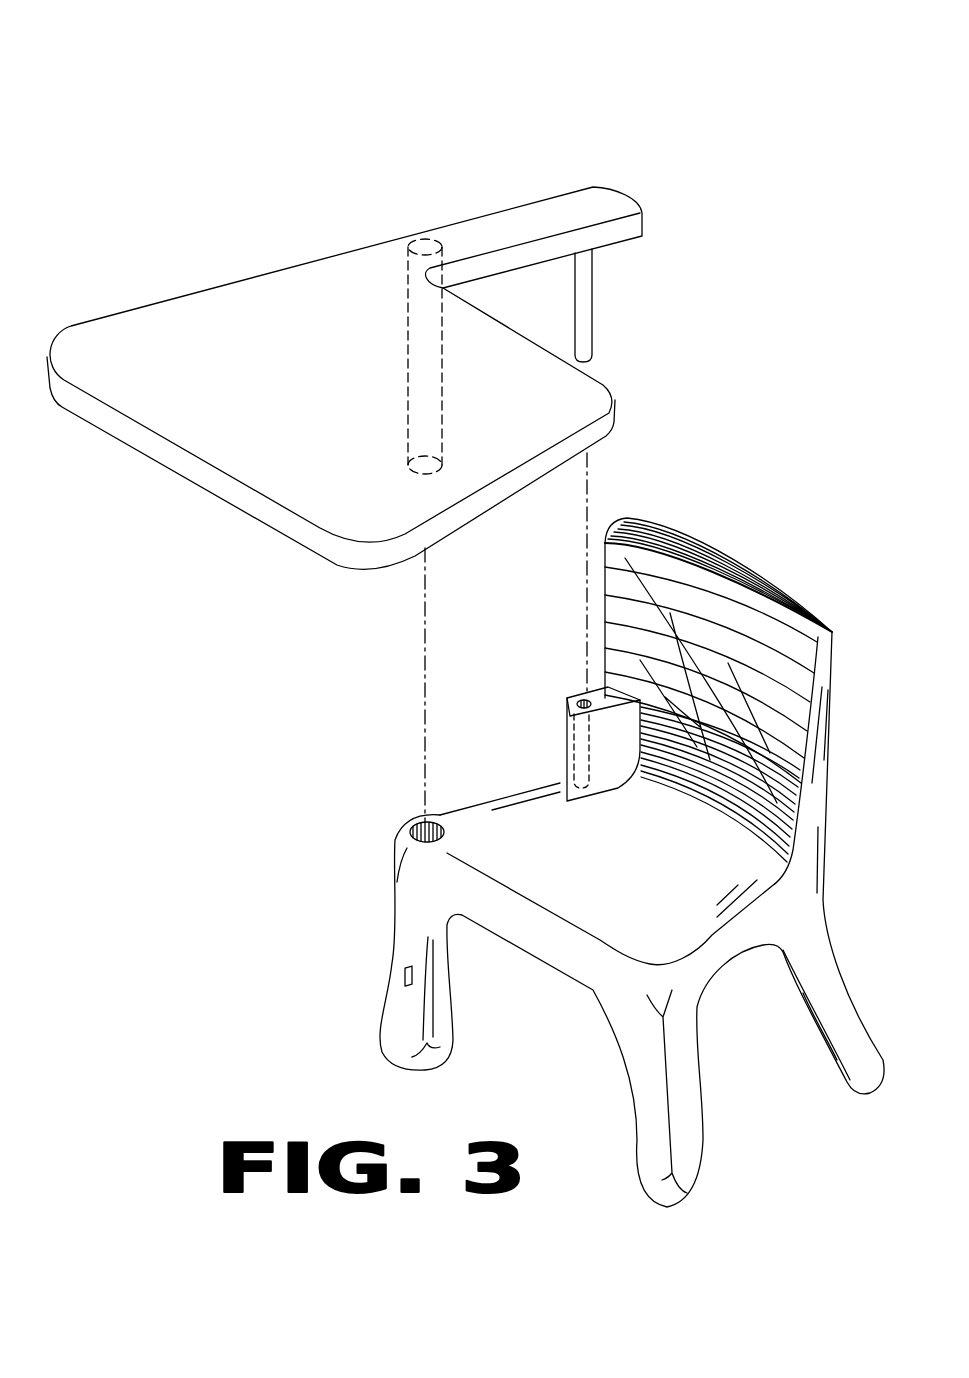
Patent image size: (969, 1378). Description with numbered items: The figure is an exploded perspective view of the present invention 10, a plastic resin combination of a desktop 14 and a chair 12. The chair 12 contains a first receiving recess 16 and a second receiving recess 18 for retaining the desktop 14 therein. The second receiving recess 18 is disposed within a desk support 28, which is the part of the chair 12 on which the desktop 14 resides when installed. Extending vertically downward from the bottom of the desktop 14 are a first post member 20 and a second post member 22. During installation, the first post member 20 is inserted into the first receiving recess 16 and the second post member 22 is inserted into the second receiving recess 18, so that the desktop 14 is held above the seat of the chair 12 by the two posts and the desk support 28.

The present invention 10 is at (622, 158).
The chair 12 is at (528, 952).
The desktop 14 is at (204, 478).
The first receiving recess 16 is at (422, 818).
The second receiving recess 18 is at (567, 698).
The first post member 20 is at (405, 272).
The second post member 22 is at (592, 313).
The desk support 28 is at (587, 694).